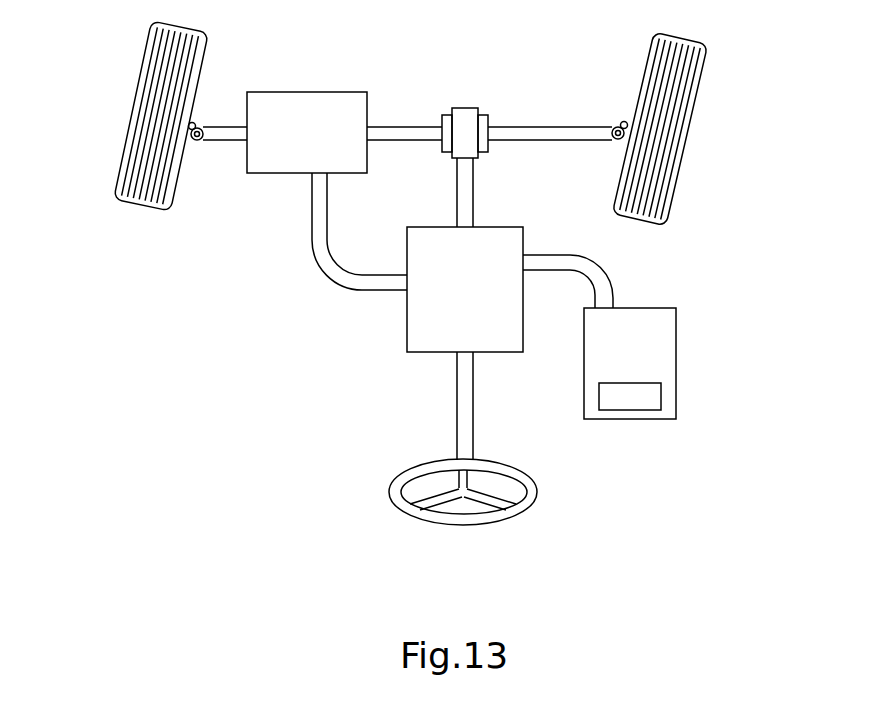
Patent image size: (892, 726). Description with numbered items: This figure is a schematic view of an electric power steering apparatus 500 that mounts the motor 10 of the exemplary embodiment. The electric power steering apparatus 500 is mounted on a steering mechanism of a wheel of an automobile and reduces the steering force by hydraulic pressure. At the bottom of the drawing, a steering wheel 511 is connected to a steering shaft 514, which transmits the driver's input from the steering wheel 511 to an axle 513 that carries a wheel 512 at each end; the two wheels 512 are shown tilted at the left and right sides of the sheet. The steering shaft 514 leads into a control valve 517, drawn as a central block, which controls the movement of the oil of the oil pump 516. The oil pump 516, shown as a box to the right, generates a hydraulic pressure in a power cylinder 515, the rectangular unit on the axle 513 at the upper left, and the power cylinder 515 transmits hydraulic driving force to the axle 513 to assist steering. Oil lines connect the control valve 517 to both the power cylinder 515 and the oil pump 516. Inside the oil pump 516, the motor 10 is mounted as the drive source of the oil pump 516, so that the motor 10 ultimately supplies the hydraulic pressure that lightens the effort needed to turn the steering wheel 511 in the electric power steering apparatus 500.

The electric power steering apparatus 500 is at (400, 400).
The steering wheel 511 is at (453, 518).
The wheel 512 is at (145, 186).
The axle 513 is at (515, 133).
The steering shaft 514 is at (465, 403).
The power cylinder 515 is at (305, 110).
The oil pump 516 is at (662, 353).
The control valve 517 is at (425, 318).
The motor 10 is at (637, 398).